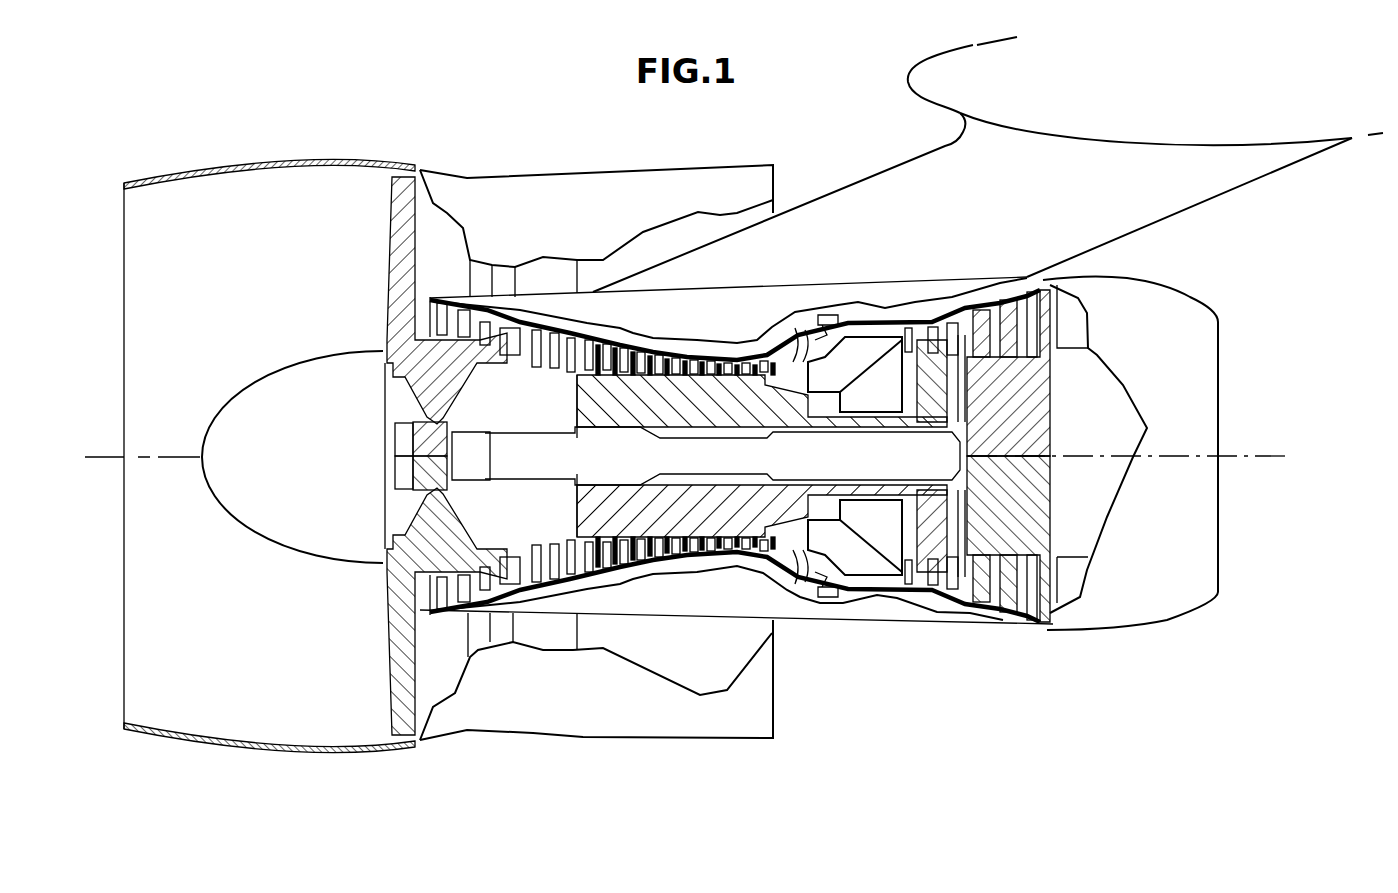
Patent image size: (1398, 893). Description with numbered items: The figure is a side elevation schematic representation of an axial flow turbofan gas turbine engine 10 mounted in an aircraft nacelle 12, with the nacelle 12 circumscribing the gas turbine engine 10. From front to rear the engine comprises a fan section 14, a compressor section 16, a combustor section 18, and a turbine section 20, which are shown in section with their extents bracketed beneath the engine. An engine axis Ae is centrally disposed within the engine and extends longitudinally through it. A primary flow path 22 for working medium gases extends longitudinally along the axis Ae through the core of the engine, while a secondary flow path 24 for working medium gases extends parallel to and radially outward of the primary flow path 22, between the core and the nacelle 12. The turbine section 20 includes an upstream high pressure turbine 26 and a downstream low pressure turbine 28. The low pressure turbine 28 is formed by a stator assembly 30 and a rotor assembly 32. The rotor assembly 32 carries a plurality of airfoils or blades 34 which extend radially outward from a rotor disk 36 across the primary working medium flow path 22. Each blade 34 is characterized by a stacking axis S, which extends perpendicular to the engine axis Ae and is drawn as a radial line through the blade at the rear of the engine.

The turbofan gas turbine engine 10 is at (1063, 291).
The aircraft nacelle 12 is at (1188, 286).
The fan section 14 is at (389, 760).
The compressor section 16 is at (773, 760).
The combustor section 18 is at (903, 745).
The turbine section 20 is at (903, 745).
The primary flow path 22 is at (370, 588).
The secondary flow path 24 is at (372, 684).
The high pressure turbine 26 is at (922, 592).
The low pressure turbine 28 is at (1013, 625).
The stator assembly 30 is at (1023, 627).
The rotor assembly 32 is at (1052, 518).
The blades 34 is at (988, 300).
The rotor disk 36 is at (1043, 435).
The stacking axis S is at (969, 300).
The engine axis Ae is at (63, 448).